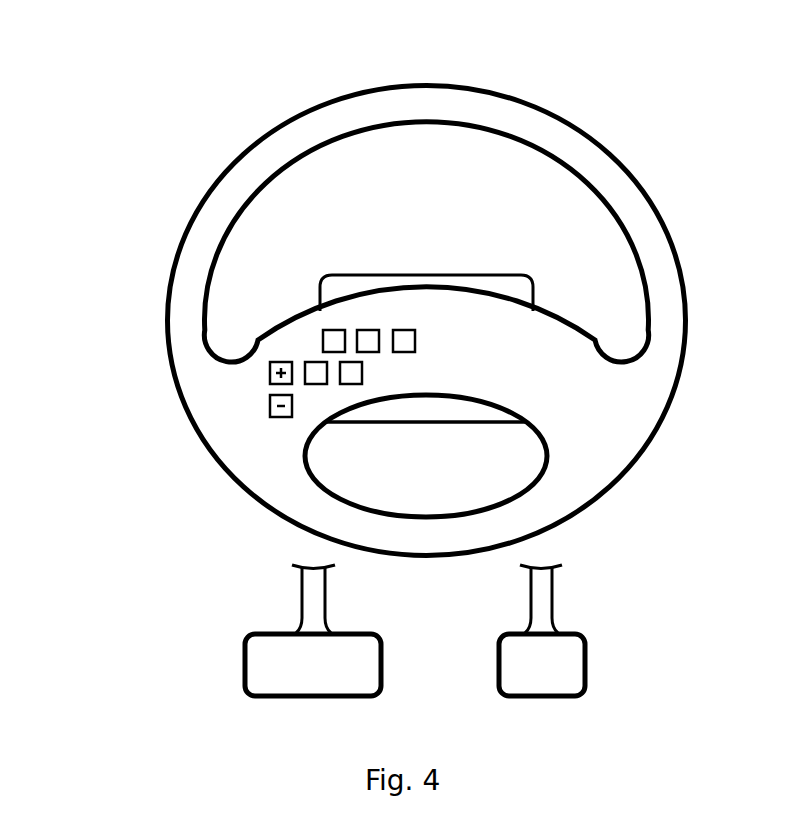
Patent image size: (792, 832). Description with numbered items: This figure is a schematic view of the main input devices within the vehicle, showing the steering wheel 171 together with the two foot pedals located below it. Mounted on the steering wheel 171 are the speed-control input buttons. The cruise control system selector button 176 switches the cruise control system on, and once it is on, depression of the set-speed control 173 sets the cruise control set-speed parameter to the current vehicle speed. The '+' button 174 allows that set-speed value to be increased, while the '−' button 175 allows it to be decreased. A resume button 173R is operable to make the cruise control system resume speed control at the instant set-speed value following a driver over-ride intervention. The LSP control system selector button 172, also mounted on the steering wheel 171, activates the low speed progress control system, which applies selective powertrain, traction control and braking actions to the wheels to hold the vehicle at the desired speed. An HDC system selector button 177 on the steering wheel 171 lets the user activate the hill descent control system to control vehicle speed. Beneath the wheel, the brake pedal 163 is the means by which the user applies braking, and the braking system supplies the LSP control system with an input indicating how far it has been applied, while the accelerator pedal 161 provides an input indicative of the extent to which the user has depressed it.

The steering wheel 171 is at (662, 272).
The LSP control system selector button 172 is at (336, 330).
The set-speed control 173 is at (308, 362).
The resume button 173R is at (350, 385).
The '+' button 174 is at (270, 370).
The '−' button 175 is at (270, 409).
The cruise control system selector button 176 is at (373, 330).
The HDC system selector button 177 is at (405, 330).
The accelerator pedal 161 is at (567, 660).
The brake pedal 163 is at (260, 660).